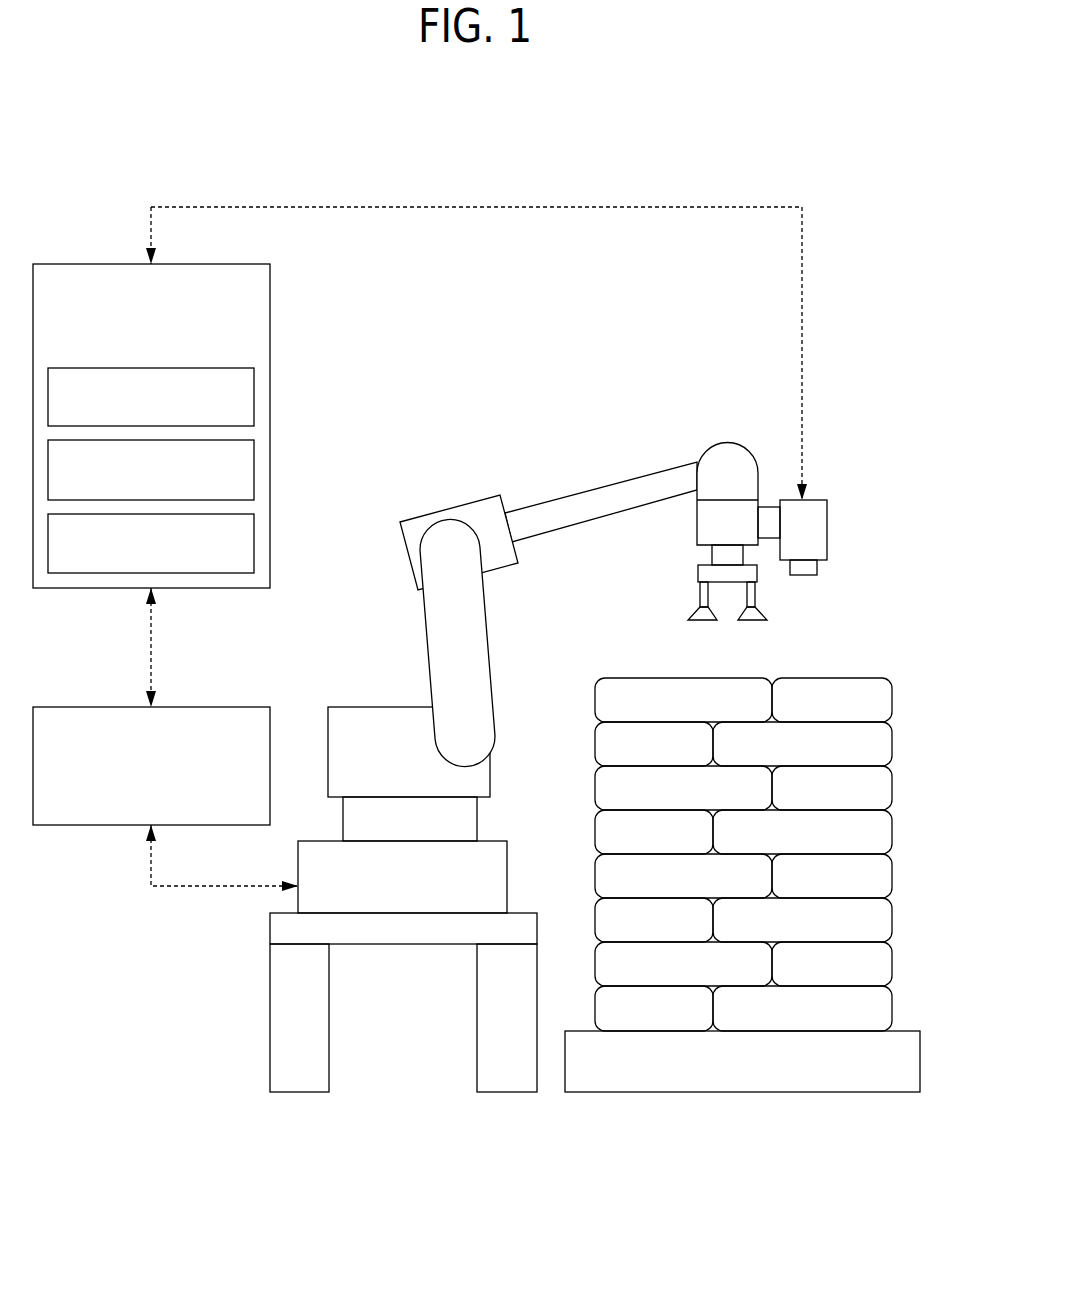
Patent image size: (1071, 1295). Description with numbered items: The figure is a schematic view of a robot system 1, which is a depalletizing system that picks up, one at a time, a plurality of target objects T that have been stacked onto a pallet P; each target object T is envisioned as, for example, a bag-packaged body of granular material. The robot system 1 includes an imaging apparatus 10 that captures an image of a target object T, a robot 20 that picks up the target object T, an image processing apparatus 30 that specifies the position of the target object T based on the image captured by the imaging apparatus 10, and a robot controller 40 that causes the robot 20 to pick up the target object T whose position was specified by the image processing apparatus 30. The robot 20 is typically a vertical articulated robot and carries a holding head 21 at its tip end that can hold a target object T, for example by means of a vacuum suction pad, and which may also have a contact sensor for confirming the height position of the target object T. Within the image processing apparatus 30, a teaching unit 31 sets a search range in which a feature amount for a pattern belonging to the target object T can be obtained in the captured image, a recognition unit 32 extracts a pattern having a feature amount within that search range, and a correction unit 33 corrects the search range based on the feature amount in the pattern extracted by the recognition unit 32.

The robot system 1 is at (508, 160).
The imaging apparatus 10 is at (828, 527).
The robot 20 is at (461, 482).
The holding head 21 is at (698, 578).
The image processing apparatus 30 is at (77, 250).
The teaching unit 31 is at (254, 397).
The recognition unit 32 is at (254, 467).
The correction unit 33 is at (254, 540).
The robot controller 40 is at (77, 693).
The target object T is at (636, 677).
The pallet P is at (742, 1094).